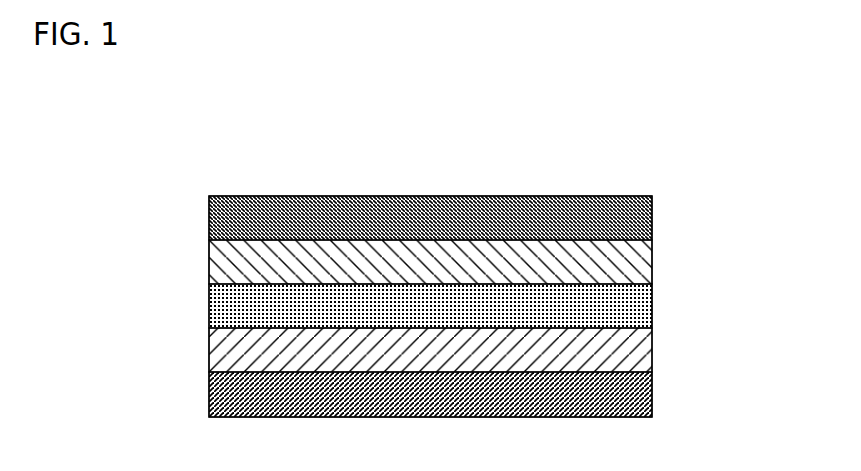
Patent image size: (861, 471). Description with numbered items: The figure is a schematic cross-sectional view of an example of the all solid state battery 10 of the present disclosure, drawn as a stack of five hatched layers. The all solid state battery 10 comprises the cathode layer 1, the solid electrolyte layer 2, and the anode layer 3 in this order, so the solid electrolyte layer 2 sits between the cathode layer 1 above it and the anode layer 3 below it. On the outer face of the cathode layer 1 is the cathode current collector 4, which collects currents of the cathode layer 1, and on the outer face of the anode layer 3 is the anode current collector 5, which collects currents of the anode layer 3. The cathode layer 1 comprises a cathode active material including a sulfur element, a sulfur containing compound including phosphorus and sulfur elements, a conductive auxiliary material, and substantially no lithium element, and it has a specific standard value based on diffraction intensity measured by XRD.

The all solid state battery 10 is at (638, 146).
The cathode layer 1 is at (637, 255).
The solid electrolyte layer 2 is at (637, 298).
The anode layer 3 is at (637, 343).
The cathode current collector 4 is at (637, 207).
The anode current collector 5 is at (637, 388).